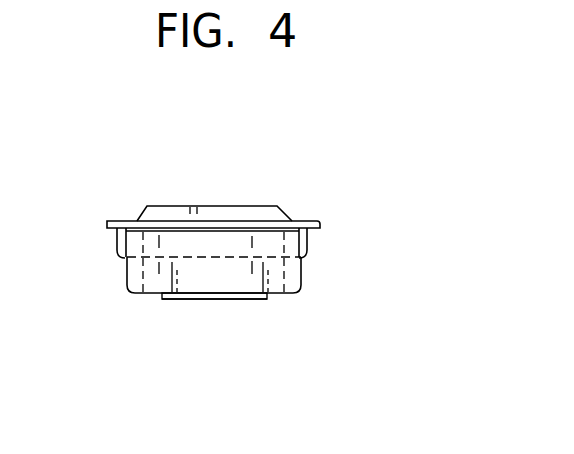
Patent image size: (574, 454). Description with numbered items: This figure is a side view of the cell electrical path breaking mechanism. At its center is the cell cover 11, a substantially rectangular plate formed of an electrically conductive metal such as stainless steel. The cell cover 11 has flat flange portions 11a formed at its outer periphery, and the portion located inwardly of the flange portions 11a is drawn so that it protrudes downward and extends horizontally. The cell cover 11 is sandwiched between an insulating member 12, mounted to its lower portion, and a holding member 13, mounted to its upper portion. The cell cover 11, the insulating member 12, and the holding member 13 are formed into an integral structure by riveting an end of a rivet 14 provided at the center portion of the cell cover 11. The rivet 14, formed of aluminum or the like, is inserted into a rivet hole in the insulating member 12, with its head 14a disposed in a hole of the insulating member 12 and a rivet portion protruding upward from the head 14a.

The cell cover 11 is at (257, 241).
The flat flange portions 11a is at (290, 220).
The insulating member 12 is at (289, 294).
The holding member 13 is at (258, 206).
The rivet 14 is at (219, 336).
The head 14a is at (200, 299).